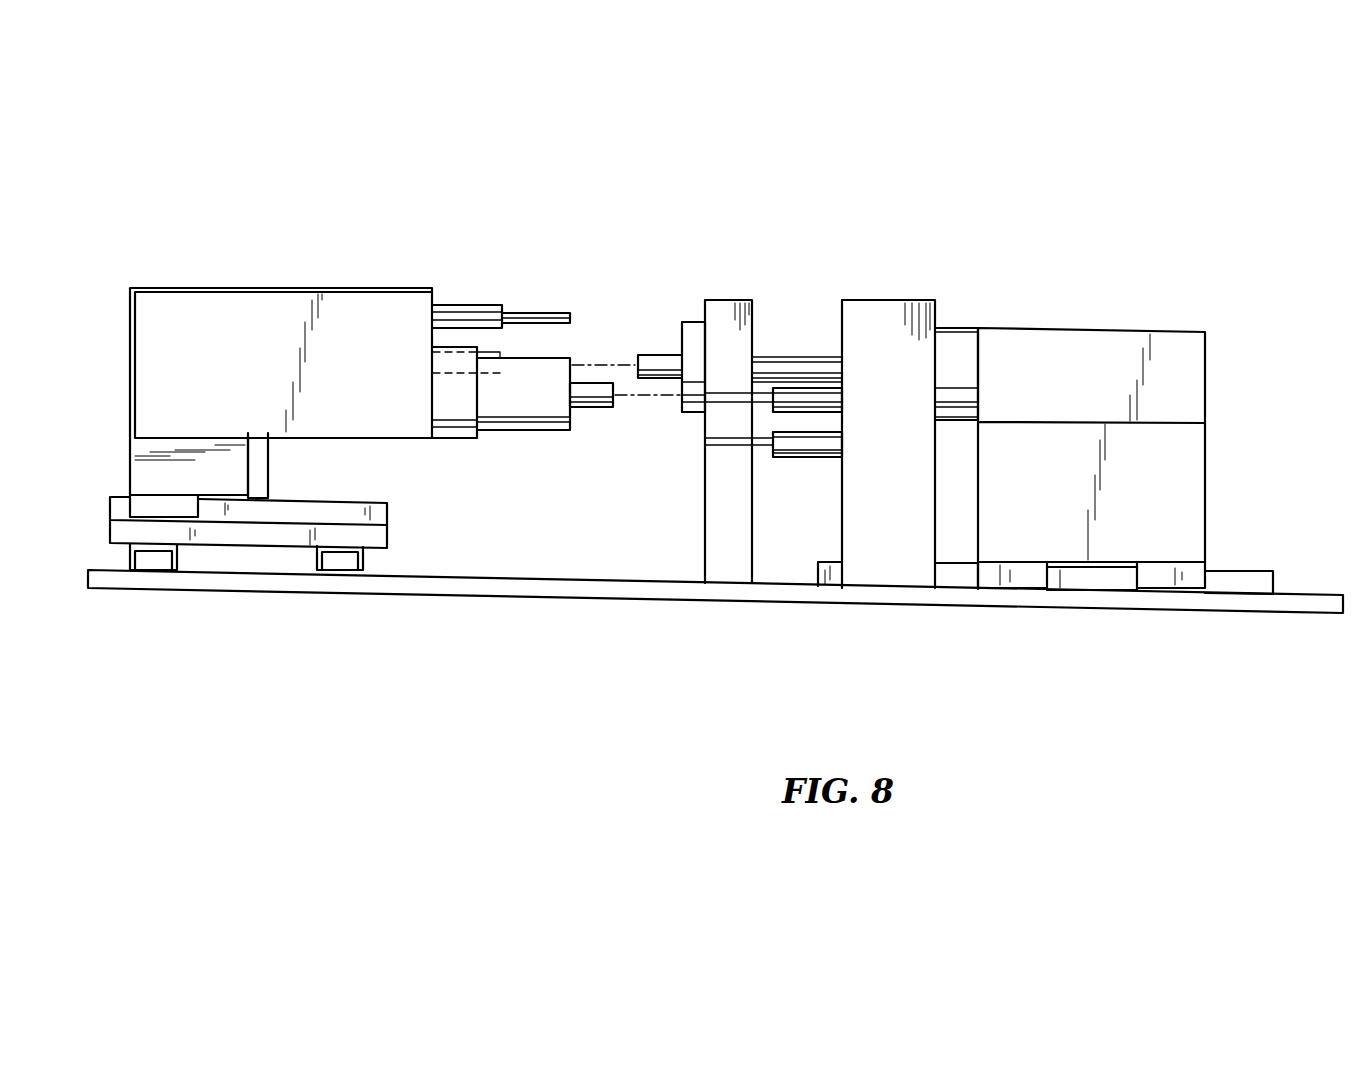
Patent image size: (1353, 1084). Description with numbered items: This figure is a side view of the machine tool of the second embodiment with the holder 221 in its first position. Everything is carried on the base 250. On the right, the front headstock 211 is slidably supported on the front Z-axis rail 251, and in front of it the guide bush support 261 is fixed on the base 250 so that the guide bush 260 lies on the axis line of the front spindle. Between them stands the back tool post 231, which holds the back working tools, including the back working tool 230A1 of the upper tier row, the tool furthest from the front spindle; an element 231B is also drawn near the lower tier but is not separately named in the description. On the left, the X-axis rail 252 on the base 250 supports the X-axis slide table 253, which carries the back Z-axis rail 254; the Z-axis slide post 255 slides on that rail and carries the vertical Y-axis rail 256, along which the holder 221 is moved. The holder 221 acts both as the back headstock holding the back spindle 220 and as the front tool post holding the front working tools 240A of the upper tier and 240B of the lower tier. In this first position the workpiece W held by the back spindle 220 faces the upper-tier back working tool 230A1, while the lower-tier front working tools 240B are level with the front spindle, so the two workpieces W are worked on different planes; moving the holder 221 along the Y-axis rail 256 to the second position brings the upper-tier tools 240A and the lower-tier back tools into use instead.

The front headstock 211 is at (1092, 345).
The back spindle 220 is at (550, 397).
The holder 221 is at (233, 308).
The back working tool 230A1 is at (762, 398).
The back tool post 231 is at (878, 322).
The guide rod 231B is at (725, 442).
The front working tools 240A is at (552, 315).
The front working tools 240B is at (527, 363).
The base 250 is at (1305, 602).
The front Z-axis rail 251 is at (1242, 580).
The X-axis rail 252 is at (150, 573).
The X-axis slide table 253 is at (378, 537).
The back Z-axis rail 254 is at (378, 515).
The Z-axis slide post 255 is at (135, 475).
The Y-axis rail 256 is at (260, 467).
The guide bush 260 is at (697, 342).
The guide bush support 261 is at (718, 307).
The workpiece W is at (655, 362).